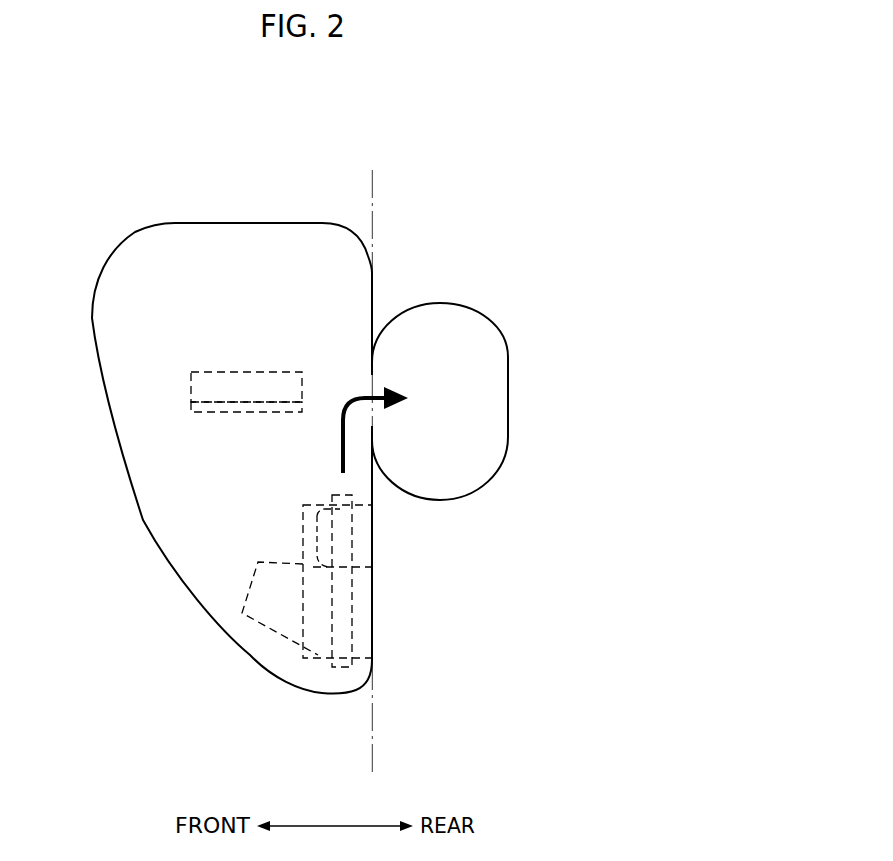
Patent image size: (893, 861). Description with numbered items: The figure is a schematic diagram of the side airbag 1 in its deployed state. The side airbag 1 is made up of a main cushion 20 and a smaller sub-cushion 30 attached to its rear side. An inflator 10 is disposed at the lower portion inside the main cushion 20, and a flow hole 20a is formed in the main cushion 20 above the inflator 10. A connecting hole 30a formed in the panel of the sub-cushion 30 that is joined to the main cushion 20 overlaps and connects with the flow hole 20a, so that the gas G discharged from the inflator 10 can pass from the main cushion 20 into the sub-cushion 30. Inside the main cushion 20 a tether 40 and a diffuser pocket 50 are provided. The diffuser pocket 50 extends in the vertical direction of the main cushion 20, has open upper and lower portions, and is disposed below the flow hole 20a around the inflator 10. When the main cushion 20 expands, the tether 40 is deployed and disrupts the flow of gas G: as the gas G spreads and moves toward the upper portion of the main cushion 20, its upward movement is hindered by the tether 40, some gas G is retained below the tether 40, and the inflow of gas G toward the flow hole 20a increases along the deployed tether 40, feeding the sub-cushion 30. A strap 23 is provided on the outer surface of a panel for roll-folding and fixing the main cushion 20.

The side airbag 1 is at (272, 168).
The main cushion 20 is at (203, 223).
The flow hole 20a is at (377, 382).
The sub-cushion 30 is at (508, 349).
The connecting hole 30a is at (379, 380).
The gas G is at (408, 396).
The tether 40 is at (190, 380).
The inflator 10 is at (380, 593).
The diffuser pocket 50 is at (380, 630).
The strap 23 is at (249, 592).